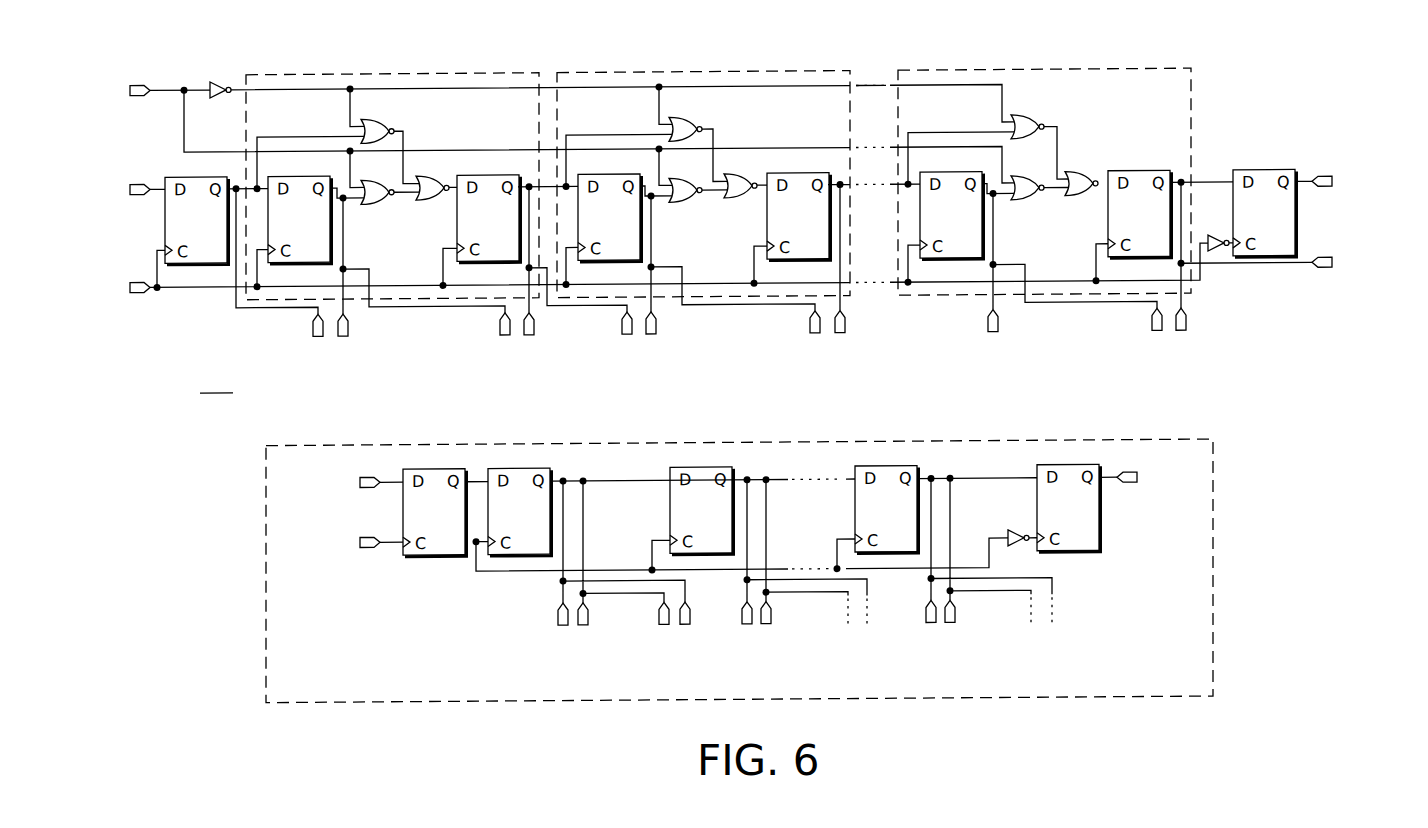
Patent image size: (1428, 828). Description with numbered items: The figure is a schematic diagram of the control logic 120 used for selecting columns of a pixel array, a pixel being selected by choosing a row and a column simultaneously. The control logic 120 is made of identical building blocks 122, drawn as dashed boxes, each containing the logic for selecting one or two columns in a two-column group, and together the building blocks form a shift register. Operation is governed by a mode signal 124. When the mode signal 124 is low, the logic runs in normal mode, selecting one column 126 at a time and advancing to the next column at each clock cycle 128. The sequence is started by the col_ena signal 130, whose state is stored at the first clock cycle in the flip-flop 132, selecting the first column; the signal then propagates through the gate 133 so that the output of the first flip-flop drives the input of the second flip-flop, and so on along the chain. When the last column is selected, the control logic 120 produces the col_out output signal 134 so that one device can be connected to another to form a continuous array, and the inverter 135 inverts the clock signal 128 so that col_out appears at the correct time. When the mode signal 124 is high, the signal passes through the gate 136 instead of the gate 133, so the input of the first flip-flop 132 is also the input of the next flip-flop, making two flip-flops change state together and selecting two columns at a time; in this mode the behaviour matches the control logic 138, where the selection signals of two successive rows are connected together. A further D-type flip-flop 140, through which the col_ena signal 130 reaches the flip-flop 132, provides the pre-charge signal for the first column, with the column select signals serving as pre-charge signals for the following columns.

The control logic 120 is at (737, 300).
The building block 122 is at (513, 75).
The mode signal 124 is at (148, 84).
The column 126 is at (684, 334).
The clock signal 128 is at (141, 298).
The col_ena signal 130 is at (133, 199).
The flip-flop 132 is at (303, 176).
The gate 133 is at (383, 206).
The col_out output signal 134 is at (1318, 183).
The inverter 135 is at (1216, 257).
The gate 136 is at (386, 123).
The control logic 138 is at (332, 677).
The D-type flip-flop 140 is at (170, 176).